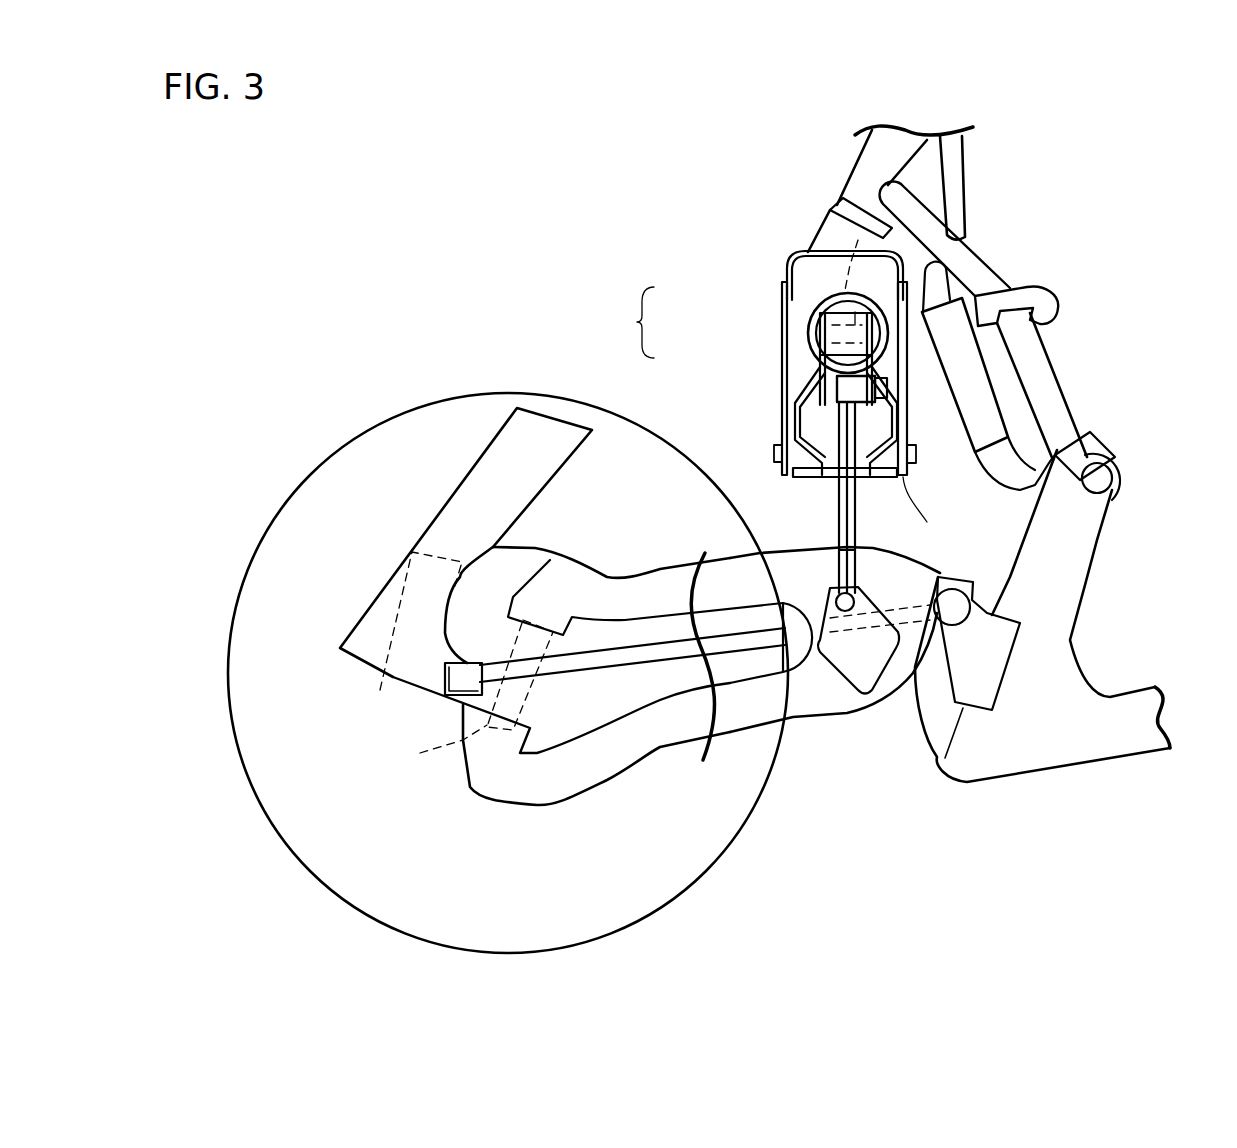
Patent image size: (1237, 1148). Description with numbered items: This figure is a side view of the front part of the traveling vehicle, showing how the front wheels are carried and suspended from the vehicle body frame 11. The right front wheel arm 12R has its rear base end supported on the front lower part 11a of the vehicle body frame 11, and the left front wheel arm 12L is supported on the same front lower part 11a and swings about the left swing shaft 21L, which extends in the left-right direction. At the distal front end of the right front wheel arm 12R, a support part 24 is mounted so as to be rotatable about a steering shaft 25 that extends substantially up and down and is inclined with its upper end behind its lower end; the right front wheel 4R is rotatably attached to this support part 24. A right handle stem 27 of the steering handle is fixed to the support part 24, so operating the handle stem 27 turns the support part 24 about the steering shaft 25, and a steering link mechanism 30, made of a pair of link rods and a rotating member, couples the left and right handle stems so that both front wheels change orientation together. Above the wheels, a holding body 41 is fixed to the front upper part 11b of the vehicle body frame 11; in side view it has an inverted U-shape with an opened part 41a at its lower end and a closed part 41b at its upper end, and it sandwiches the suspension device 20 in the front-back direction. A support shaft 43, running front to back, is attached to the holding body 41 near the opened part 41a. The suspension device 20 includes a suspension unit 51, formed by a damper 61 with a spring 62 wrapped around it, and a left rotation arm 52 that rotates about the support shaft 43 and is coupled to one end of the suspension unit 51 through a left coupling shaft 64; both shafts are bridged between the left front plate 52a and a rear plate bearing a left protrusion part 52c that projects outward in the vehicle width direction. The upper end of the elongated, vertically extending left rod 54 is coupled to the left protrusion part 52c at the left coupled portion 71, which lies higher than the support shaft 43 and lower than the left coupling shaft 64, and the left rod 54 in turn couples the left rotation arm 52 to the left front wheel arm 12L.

The right front wheel 4R is at (309, 835).
The vehicle body frame 11 is at (1113, 770).
The front lower part 11a is at (987, 768).
The front upper part 11b is at (858, 186).
The left front wheel arm 12L is at (830, 732).
The right front wheel arm 12R is at (645, 760).
The suspension device 20 is at (812, 280).
The left swing shaft 21L is at (955, 627).
The support part 24 is at (395, 620).
The steering shaft 25 is at (420, 753).
The right handle stem 27 is at (497, 452).
The steering link mechanism 30 is at (672, 612).
The holding body 41 is at (765, 305).
The opened part 41a is at (939, 524).
The closed part 41b is at (800, 250).
The support shaft 43 is at (868, 462).
The suspension unit 51 is at (621, 322).
The left rotation arm 52 is at (891, 424).
The left front plate 52a is at (820, 375).
The left protrusion part 52c is at (867, 415).
The left rod 54 is at (838, 518).
The damper 61 is at (827, 308).
The spring 62 is at (807, 333).
The left coupling shaft 64 is at (883, 202).
The left coupled portion 71 is at (892, 380).